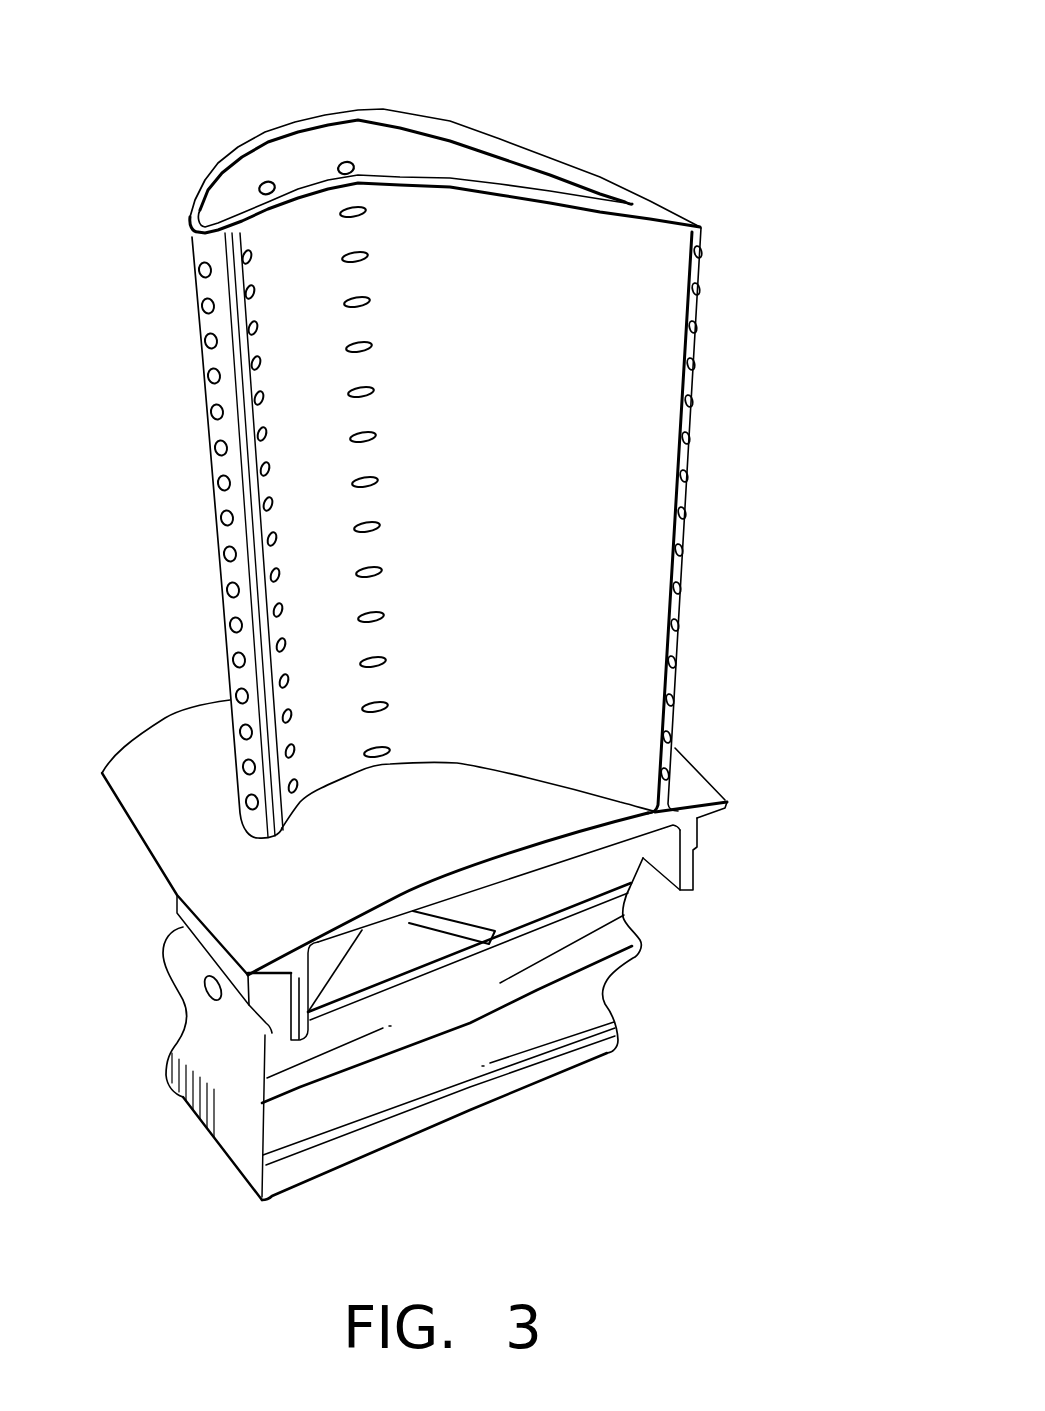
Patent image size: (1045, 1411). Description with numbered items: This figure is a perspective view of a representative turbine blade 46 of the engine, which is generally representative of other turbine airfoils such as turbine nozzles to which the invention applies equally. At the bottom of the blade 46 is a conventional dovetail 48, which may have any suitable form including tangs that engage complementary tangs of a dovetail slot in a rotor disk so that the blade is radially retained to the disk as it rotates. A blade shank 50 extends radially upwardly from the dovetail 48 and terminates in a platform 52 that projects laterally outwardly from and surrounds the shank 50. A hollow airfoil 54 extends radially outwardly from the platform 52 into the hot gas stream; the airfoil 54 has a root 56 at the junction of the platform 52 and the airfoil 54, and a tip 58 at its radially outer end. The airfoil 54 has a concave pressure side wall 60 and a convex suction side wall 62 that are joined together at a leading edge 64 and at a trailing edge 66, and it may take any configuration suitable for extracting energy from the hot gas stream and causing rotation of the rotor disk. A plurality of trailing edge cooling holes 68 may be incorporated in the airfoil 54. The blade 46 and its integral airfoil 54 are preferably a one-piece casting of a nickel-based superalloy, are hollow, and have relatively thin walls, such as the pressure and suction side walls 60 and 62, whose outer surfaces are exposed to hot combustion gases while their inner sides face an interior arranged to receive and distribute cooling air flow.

The turbine blade 46 is at (728, 70).
The dovetail 48 is at (237, 1147).
The blade shank 50 is at (193, 963).
The platform 52 is at (165, 752).
The airfoil 54 is at (305, 249).
The root 56 is at (460, 763).
The tip 58 is at (374, 114).
The pressure side wall 60 is at (556, 433).
The suction side wall 62 is at (305, 313).
The leading edge 64 is at (247, 508).
The trailing edge 66 is at (697, 343).
The trailing edge cooling holes 68 is at (685, 550).